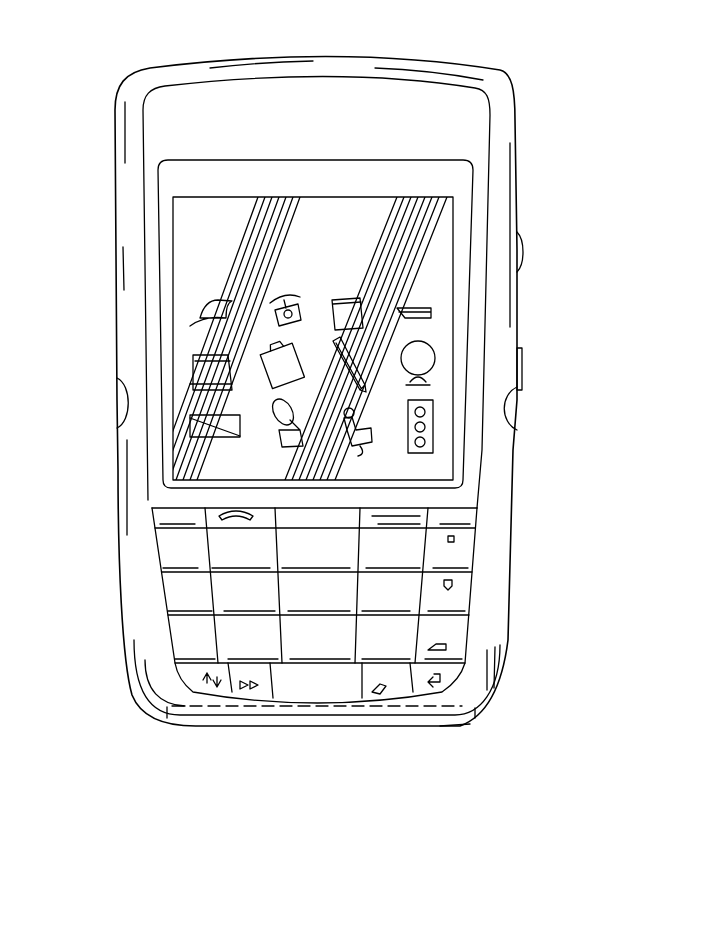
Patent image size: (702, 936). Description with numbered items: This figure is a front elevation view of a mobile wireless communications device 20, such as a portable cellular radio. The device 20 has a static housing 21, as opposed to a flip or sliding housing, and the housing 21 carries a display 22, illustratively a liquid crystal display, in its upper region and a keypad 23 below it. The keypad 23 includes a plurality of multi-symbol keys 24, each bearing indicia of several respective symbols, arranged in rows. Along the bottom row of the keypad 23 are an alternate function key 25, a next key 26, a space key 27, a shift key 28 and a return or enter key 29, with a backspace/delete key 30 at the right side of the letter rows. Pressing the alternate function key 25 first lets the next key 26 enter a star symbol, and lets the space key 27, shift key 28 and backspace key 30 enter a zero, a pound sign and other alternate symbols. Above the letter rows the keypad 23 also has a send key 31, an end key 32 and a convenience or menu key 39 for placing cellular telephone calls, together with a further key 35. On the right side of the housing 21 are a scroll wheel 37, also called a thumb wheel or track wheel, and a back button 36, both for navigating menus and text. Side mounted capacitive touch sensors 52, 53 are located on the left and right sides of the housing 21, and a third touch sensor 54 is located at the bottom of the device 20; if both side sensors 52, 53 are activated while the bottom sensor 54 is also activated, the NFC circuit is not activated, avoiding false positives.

The mobile wireless communications device 20 is at (562, 57).
The housing 21 is at (158, 83).
The display 22 is at (185, 277).
The keypad 23 is at (492, 546).
The multi-symbol keys 24 is at (170, 592).
The alternate function key 25 is at (188, 680).
The next key 26 is at (243, 692).
The space key 27 is at (308, 690).
The shift key 28 is at (392, 690).
The return key 29 is at (450, 673).
The backspace/delete key 30 is at (460, 637).
The send key 31 is at (217, 517).
The end key 32 is at (403, 520).
The menu key 35 is at (467, 597).
The back button 36 is at (520, 372).
The scroll wheel 37 is at (522, 252).
The convenience key 39 is at (328, 537).
The side mounted touch sensor 52 is at (118, 403).
The side mounted touch sensor 53 is at (518, 405).
The third touch sensor 54 is at (465, 723).